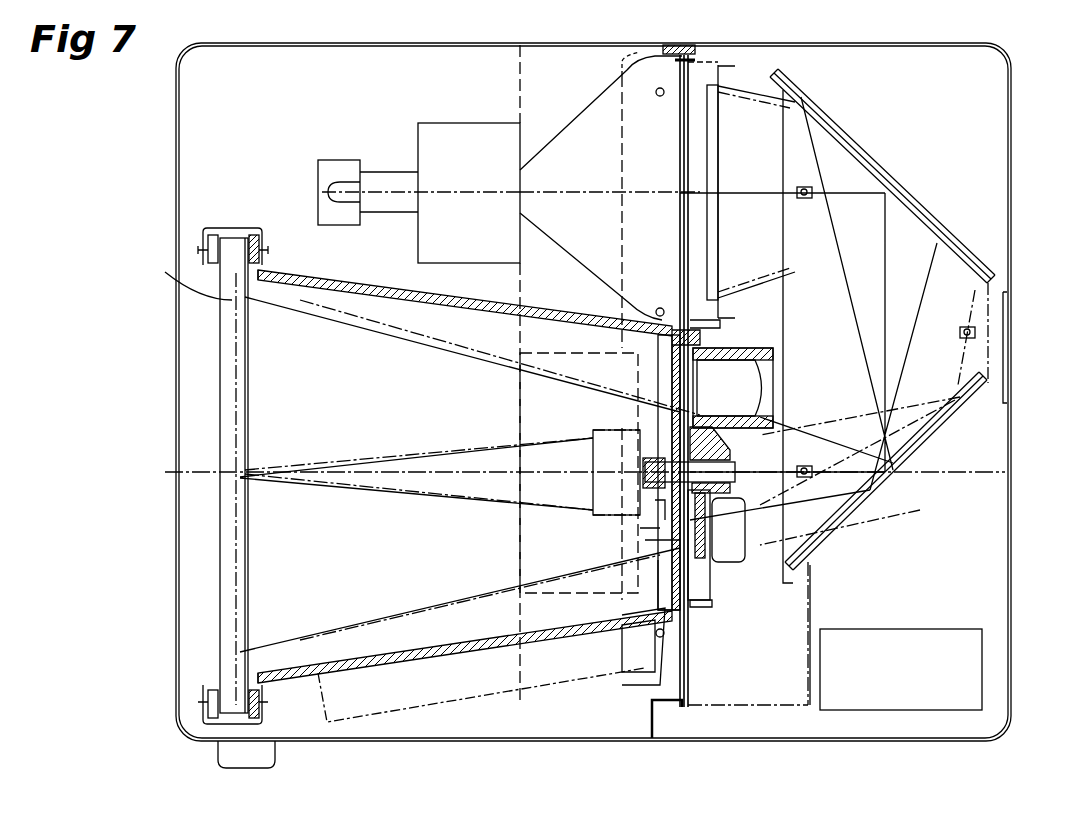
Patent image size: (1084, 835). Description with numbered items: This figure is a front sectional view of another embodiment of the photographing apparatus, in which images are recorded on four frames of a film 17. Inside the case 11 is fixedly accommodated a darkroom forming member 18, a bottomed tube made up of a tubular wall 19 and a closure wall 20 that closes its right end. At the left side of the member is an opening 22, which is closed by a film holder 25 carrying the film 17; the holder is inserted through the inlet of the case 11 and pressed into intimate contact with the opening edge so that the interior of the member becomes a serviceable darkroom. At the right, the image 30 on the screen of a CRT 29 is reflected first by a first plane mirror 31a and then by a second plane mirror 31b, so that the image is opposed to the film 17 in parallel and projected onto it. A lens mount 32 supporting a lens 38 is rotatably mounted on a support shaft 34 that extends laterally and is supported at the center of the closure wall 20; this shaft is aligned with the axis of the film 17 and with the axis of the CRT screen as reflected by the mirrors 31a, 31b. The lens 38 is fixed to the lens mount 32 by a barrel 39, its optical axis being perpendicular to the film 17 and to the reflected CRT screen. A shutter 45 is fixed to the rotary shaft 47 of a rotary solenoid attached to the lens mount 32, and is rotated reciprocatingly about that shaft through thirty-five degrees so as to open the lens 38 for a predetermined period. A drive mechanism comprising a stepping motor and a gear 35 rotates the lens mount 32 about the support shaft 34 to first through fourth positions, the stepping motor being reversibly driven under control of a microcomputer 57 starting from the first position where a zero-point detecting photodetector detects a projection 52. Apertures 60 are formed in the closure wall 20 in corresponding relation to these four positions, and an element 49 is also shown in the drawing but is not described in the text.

The case 11 is at (918, 36).
The film 17 is at (236, 392).
The darkroom forming member 18 is at (445, 668).
The tubular wall 19 is at (402, 662).
The closure wall 20 is at (668, 592).
The opening 22 is at (232, 300).
The film holder 25 is at (220, 353).
The CRT 29 is at (583, 130).
The image 30 is at (712, 137).
The first plane mirror 31a is at (857, 163).
The second plane mirror 31b is at (883, 478).
The lens mount 32 is at (708, 590).
The support shaft 34 is at (735, 470).
The gear 35 is at (700, 607).
The lens 38 is at (760, 388).
The barrel 39 is at (743, 350).
The shutter 45 is at (672, 400).
The rotary shaft 47 is at (655, 545).
The drive unit 49 is at (735, 555).
The projection 52 is at (700, 343).
The microcomputer 57 is at (975, 660).
The apertures 60 is at (640, 443).